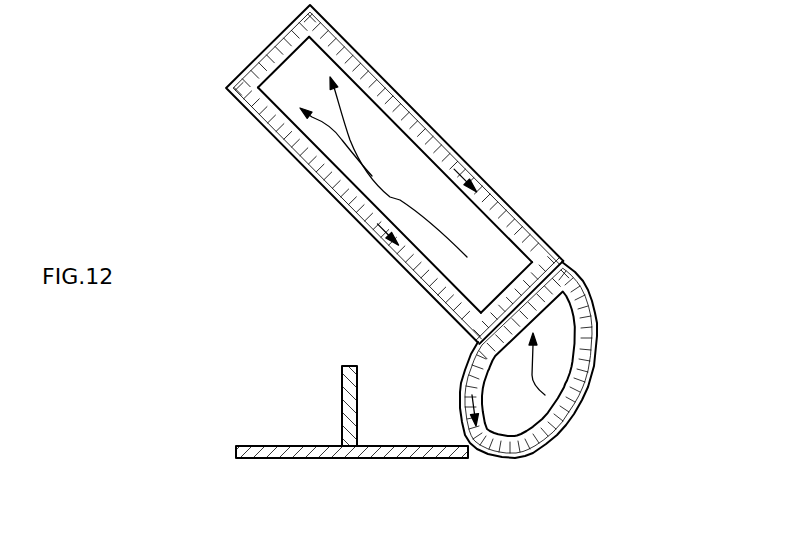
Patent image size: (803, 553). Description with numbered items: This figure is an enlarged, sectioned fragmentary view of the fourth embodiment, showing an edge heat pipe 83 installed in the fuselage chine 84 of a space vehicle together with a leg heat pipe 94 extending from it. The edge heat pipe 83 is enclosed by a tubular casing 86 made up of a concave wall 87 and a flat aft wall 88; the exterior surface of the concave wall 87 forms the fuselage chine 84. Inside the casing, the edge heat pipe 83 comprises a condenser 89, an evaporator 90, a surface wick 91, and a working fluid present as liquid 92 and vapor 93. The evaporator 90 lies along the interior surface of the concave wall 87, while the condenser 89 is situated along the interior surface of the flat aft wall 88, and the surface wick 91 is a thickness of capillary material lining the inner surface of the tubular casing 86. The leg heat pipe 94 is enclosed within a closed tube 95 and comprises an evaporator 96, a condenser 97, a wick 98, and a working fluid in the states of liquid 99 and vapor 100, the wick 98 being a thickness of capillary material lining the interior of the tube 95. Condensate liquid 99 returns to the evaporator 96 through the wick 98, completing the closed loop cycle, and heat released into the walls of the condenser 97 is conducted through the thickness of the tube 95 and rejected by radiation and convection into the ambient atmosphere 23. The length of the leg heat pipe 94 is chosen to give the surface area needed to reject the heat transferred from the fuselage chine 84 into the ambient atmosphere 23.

The ambient atmosphere 23 is at (617, 126).
The edge heat pipe 83 is at (538, 465).
The fuselage chine 84 is at (623, 376).
The tubular casing 86 is at (577, 285).
The concave wall 87 is at (583, 397).
The flat aft wall 88 is at (470, 318).
The condenser 89 is at (566, 336).
The evaporator 90 is at (518, 429).
The surface wick 91 is at (580, 322).
The liquid 92 is at (463, 380).
The vapor 93 is at (557, 413).
The leg heat pipe 94 is at (405, 82).
The closed tube 95 is at (352, 42).
The evaporator 96 is at (504, 297).
The condenser 97 is at (301, 101).
The wick 98 is at (453, 157).
The liquid 99 is at (340, 203).
The vapor 100 is at (400, 197).